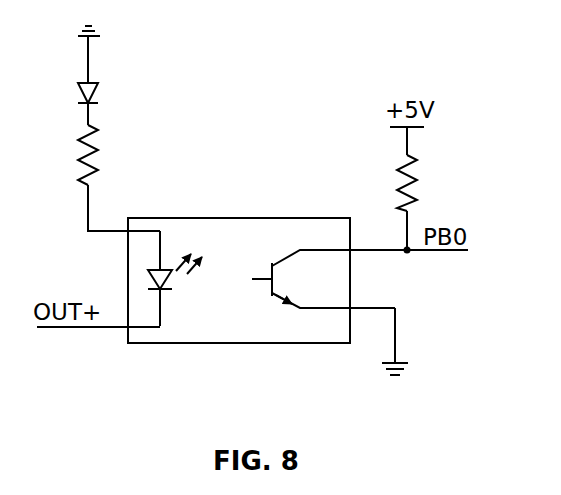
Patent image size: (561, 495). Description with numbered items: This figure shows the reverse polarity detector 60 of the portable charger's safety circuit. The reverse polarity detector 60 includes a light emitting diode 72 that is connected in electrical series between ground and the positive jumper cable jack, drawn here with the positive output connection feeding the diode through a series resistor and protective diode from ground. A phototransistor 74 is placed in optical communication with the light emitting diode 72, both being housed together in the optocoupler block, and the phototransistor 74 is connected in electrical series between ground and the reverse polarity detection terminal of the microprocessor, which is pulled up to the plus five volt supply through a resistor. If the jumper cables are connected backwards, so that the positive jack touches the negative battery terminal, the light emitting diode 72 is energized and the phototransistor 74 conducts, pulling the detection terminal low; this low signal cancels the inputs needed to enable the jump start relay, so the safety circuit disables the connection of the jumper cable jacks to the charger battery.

The reverse polarity detector 60 is at (298, 226).
The light emitting diode 72 is at (131, 211).
The phototransistor 74 is at (300, 212).